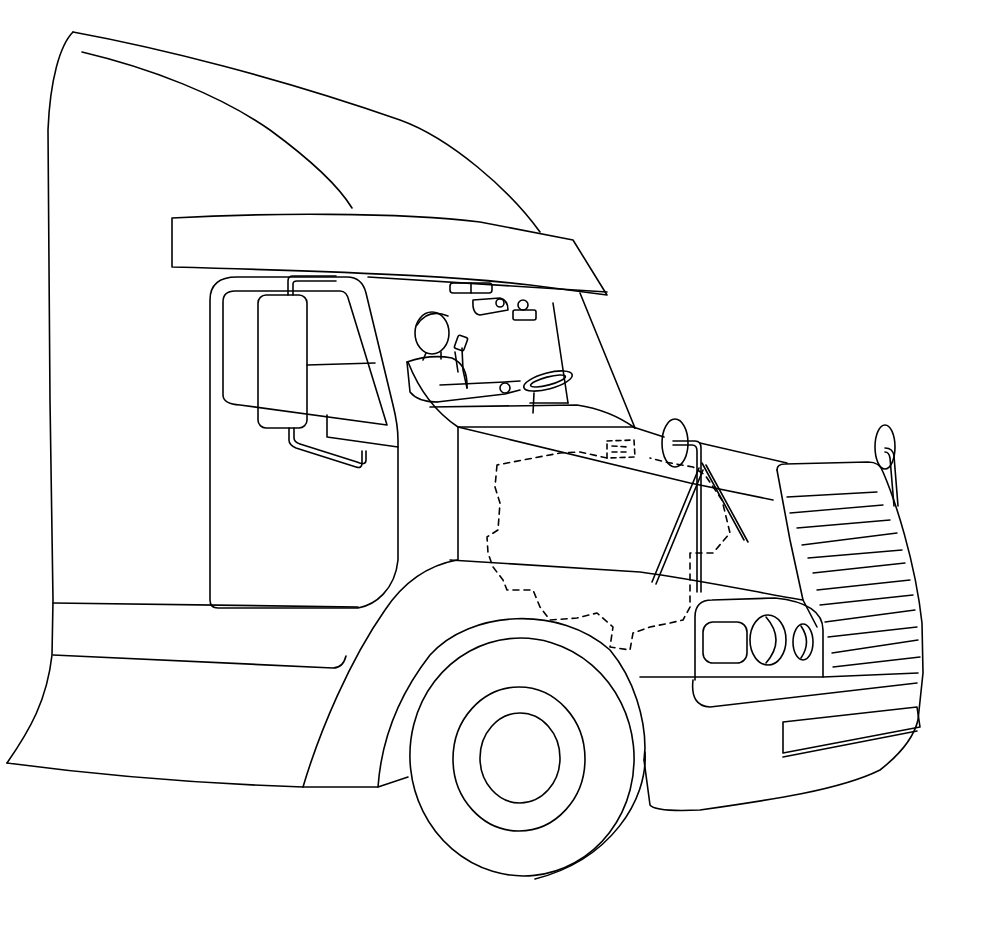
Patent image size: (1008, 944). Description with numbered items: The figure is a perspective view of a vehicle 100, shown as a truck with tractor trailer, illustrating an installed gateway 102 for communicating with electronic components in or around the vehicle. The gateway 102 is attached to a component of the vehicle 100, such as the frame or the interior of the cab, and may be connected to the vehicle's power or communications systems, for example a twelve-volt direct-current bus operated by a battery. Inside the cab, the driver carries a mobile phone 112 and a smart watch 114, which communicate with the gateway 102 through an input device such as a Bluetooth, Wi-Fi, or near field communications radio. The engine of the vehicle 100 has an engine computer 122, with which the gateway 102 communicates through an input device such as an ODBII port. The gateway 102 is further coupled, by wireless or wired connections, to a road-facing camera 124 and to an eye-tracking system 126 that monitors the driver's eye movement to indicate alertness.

The vehicle 100 is at (352, 100).
The gateway 102 is at (482, 285).
The mobile phone 112 is at (458, 336).
The smart watch 114 is at (527, 390).
The engine computer 122 is at (636, 441).
The road-facing camera 124 is at (540, 313).
The eye-tracking system 126 is at (490, 300).